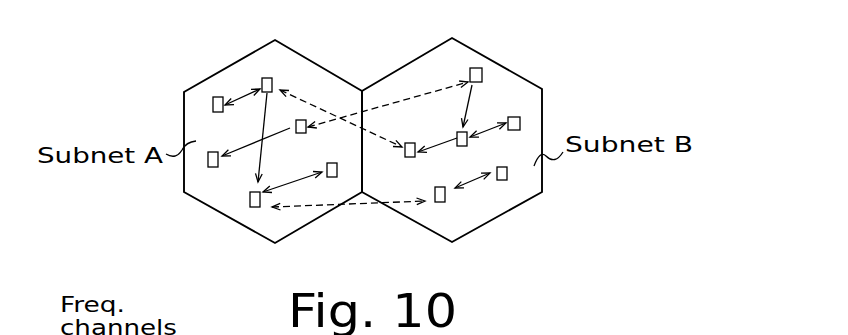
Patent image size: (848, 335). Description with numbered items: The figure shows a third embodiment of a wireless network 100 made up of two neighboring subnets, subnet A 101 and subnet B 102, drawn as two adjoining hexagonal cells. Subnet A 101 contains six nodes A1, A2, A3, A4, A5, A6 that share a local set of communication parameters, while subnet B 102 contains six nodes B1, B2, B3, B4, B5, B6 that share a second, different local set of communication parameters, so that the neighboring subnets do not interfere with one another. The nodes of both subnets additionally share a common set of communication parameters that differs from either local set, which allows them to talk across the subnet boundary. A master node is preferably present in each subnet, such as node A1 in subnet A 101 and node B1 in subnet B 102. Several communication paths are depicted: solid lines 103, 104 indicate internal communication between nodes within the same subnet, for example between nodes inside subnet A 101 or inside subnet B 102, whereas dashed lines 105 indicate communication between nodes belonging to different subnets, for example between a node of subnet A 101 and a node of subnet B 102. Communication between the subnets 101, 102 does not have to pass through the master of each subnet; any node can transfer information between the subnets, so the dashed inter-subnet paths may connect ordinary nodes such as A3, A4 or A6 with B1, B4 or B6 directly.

The wireless network 100 is at (162, 45).
The subnet A 101 is at (184, 96).
The subnet B 102 is at (523, 83).
The solid line 103 is at (255, 141).
The solid line 104 is at (487, 177).
The dashed line 105 is at (387, 201).
The node A1 is at (215, 173).
The node A2 is at (216, 116).
The node A3 is at (266, 75).
The node A4 is at (298, 140).
The node A5 is at (335, 180).
The node A6 is at (264, 212).
The node B1 is at (462, 63).
The node B2 is at (511, 137).
The node B3 is at (501, 186).
The node B4 is at (438, 206).
The node B5 is at (460, 151).
The node B6 is at (410, 157).